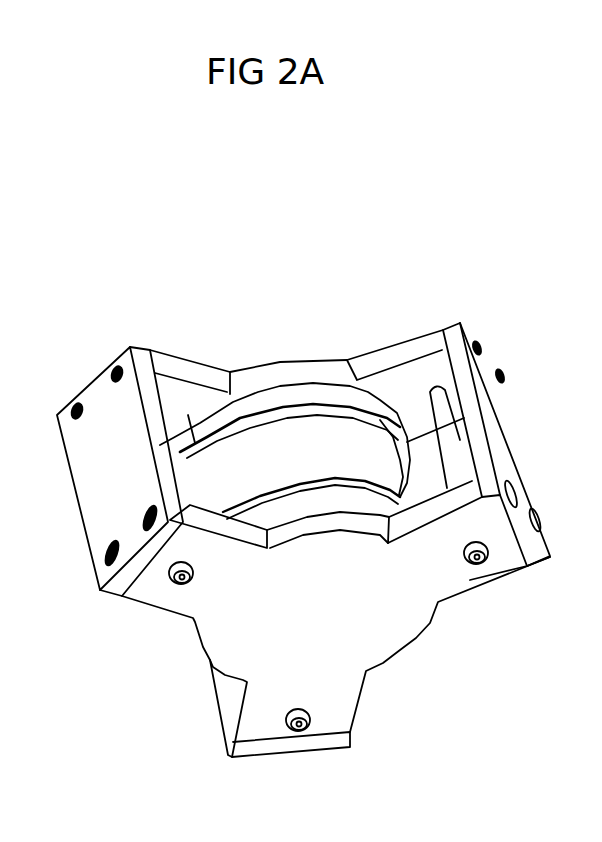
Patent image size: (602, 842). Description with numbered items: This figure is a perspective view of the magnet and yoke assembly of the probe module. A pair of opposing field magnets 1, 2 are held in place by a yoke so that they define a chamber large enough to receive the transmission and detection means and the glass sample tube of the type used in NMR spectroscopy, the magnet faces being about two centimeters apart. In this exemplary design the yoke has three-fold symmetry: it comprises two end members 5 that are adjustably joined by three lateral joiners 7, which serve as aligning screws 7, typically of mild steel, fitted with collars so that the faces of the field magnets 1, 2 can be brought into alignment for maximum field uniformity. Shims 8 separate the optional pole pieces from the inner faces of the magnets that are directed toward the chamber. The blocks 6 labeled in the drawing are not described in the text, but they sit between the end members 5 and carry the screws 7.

The field magnet 1 is at (303, 500).
The field magnet 2 is at (278, 395).
The end member 5 is at (312, 357).
The block 6 is at (303, 459).
The aligning screw 7 is at (312, 721).
The shim 8 is at (305, 432).